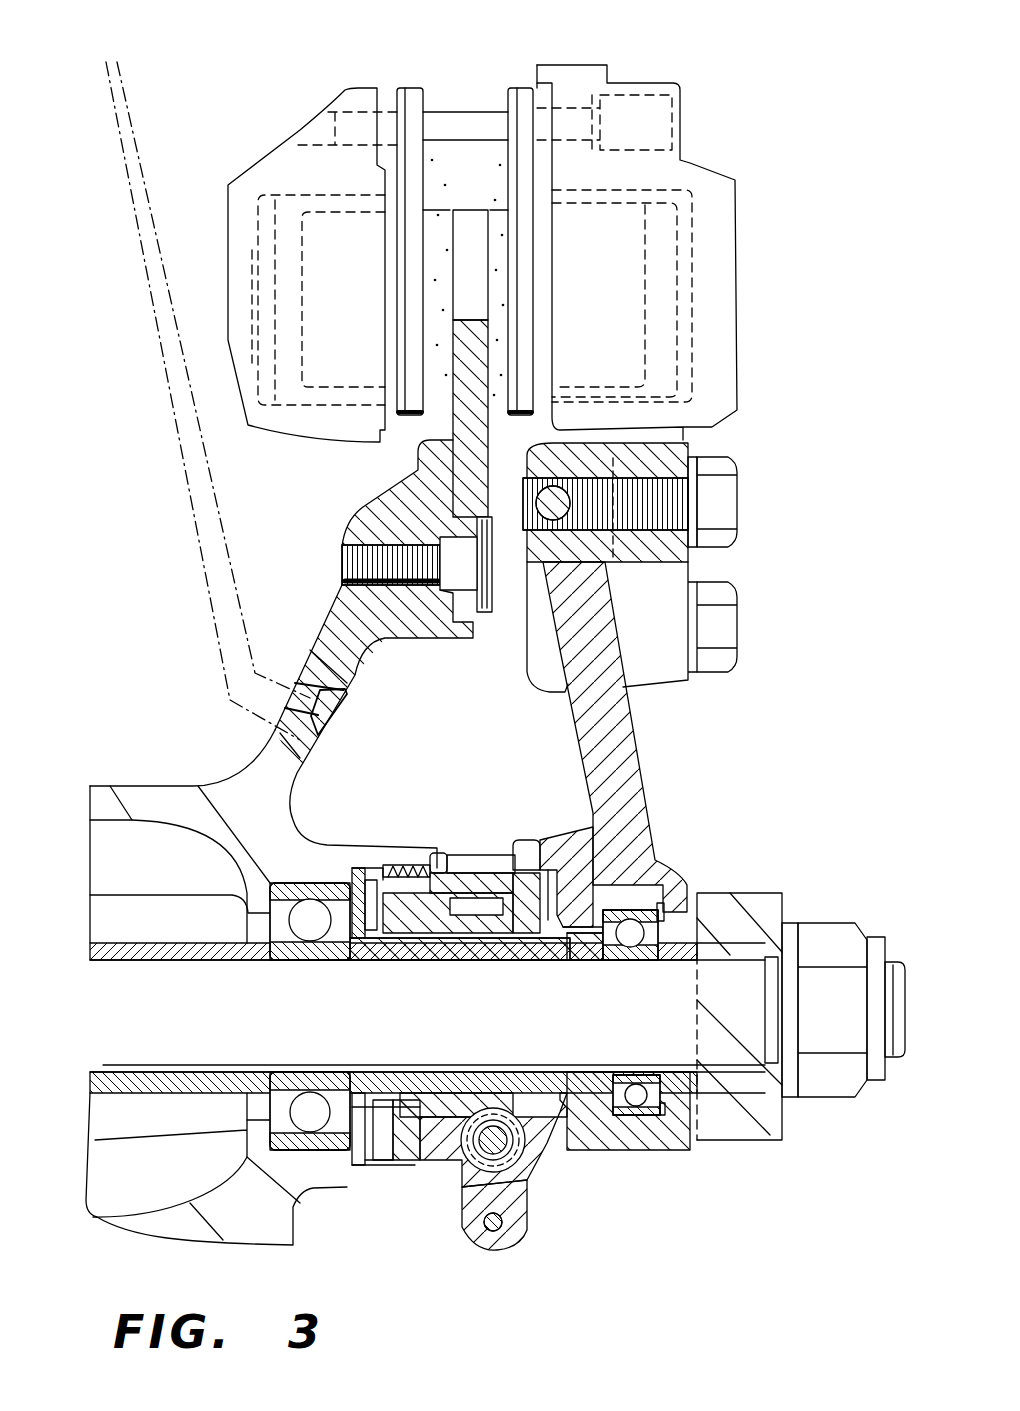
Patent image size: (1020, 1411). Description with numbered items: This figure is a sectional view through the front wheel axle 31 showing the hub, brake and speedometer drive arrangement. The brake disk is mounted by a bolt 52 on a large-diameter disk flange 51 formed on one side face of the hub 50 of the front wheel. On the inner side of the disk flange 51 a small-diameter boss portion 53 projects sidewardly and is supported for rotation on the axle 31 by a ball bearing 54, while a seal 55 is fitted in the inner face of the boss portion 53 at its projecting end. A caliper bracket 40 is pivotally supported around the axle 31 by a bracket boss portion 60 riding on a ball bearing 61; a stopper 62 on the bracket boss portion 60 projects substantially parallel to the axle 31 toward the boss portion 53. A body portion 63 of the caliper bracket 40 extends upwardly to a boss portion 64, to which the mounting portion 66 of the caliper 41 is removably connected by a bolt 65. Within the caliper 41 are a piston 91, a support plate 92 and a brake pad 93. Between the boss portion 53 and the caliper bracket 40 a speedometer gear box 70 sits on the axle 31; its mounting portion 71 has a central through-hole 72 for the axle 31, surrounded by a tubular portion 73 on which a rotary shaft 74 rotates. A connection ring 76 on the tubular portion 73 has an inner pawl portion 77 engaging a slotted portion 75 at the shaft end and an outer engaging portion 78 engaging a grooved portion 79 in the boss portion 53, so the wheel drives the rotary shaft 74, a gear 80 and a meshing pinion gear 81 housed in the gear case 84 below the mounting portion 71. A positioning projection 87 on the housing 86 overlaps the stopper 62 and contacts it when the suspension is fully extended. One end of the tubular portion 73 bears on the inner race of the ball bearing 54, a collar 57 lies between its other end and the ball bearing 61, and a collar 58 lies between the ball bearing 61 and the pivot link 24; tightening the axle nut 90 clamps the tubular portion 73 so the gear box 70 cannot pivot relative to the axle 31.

The caliper 41 is at (262, 98).
The support plate 92 is at (413, 88).
The brake pad 93 is at (497, 240).
The piston 91 is at (642, 213).
The mounting portion 66 is at (672, 460).
The bolt 65 is at (727, 503).
The boss portion 64 is at (568, 567).
The disk flange 51 is at (390, 508).
The bolt 52 is at (343, 550).
The hub 50 is at (143, 790).
The caliper bracket 40 is at (676, 760).
The seal 55 is at (400, 848).
The mounting portion 71 is at (447, 848).
The housing 86 is at (467, 855).
The positioning projection 87 is at (490, 855).
The stopper 62 is at (533, 848).
The body portion 63 is at (597, 768).
The boss portion 53 is at (325, 845).
The pivot link 24 is at (753, 900).
The axle 31 is at (110, 1012).
The ball bearing 54 is at (310, 950).
The rotary shaft 74 is at (420, 935).
The tubular portion 73 is at (473, 948).
The through-hole 72 is at (507, 958).
The collar 57 is at (587, 960).
The collar 58 is at (683, 960).
The connection ring 76 is at (350, 1093).
The pawl portion 77 is at (383, 1098).
The gear 80 is at (460, 1100).
The pinion gear 81 is at (500, 1108).
The axle nut 90 is at (835, 1100).
The slotted portion 75 is at (407, 1165).
The engaging portion 78 is at (372, 1165).
The grooved portion 79 is at (392, 1165).
The gear case 84 is at (463, 1227).
The bracket boss portion 60 is at (618, 1150).
The ball bearing 61 is at (644, 1150).
The speedometer gear box 70 is at (499, 1153).